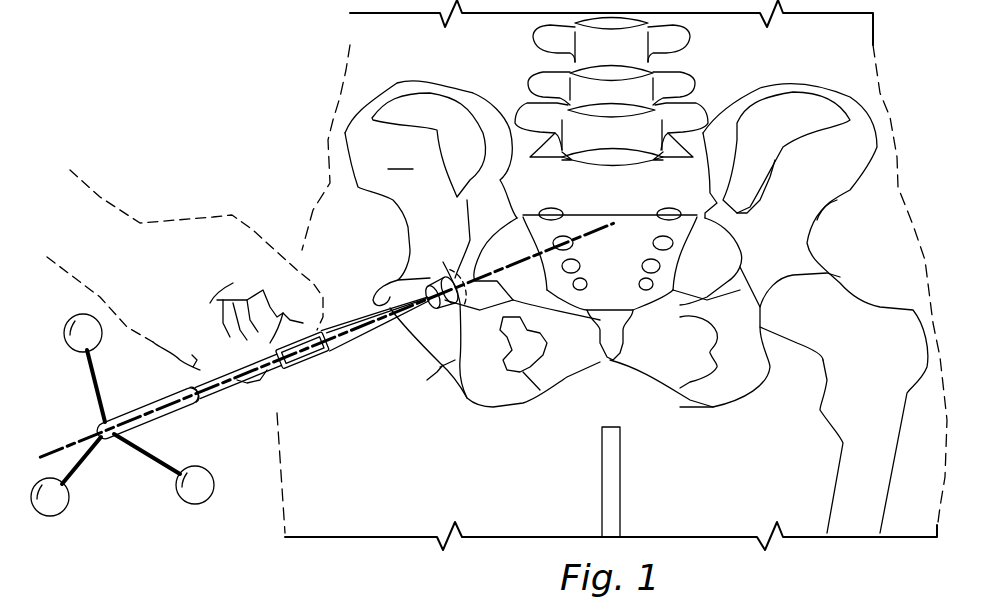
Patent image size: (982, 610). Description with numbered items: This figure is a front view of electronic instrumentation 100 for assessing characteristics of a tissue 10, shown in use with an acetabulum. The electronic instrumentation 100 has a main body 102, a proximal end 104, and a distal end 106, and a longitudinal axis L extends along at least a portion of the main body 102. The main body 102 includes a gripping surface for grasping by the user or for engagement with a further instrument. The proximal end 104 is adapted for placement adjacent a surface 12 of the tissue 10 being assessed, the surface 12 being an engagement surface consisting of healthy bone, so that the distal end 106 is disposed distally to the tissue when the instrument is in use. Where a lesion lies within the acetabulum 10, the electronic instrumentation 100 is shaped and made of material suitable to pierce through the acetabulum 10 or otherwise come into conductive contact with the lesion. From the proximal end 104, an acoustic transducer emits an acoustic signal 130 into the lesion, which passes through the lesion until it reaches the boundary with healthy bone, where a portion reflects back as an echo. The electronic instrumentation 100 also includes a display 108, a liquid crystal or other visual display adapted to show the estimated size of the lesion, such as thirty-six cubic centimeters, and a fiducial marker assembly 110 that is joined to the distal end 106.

The tissue 10 is at (548, 94).
The surface 12 is at (438, 372).
The electronic instrumentation 100 is at (311, 394).
The main body 102 is at (217, 397).
The proximal end 104 is at (380, 289).
The distal end 106 is at (157, 410).
The display 108 is at (323, 347).
The fiducial marker assembly 110 is at (178, 500).
The acoustic signal 130 is at (455, 268).